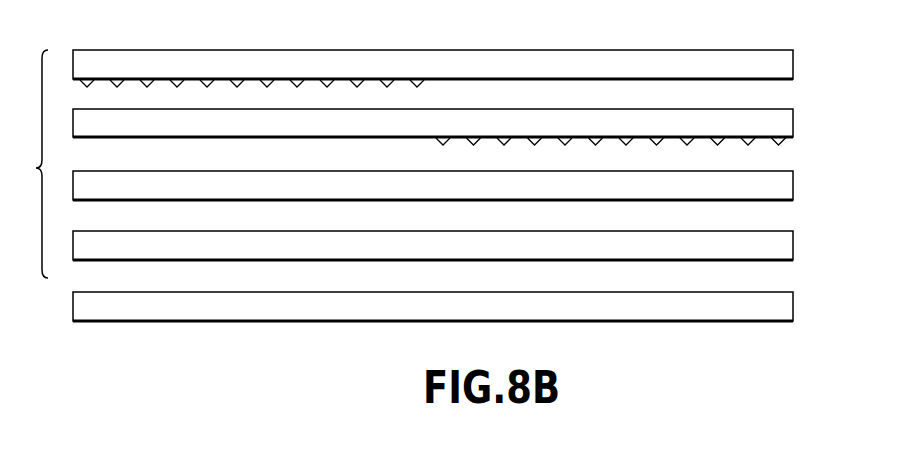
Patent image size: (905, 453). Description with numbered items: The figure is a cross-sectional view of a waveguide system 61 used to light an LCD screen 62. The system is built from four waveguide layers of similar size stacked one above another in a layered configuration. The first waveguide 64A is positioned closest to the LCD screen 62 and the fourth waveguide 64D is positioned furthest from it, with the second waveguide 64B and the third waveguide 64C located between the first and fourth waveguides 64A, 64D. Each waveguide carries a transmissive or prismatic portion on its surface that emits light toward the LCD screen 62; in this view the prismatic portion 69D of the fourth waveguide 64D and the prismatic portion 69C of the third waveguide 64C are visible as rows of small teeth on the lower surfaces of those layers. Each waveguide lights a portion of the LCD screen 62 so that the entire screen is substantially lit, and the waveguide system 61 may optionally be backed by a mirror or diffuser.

The waveguide system 61 is at (27, 164).
The LCD screen 62 is at (225, 322).
The first waveguide 64A is at (558, 247).
The second waveguide 64B is at (788, 188).
The third waveguide 64C is at (786, 128).
The fourth waveguide 64D is at (597, 52).
The transmissive or prismatic portion 69C is at (478, 141).
The transmissive or prismatic portion 69D is at (360, 79).